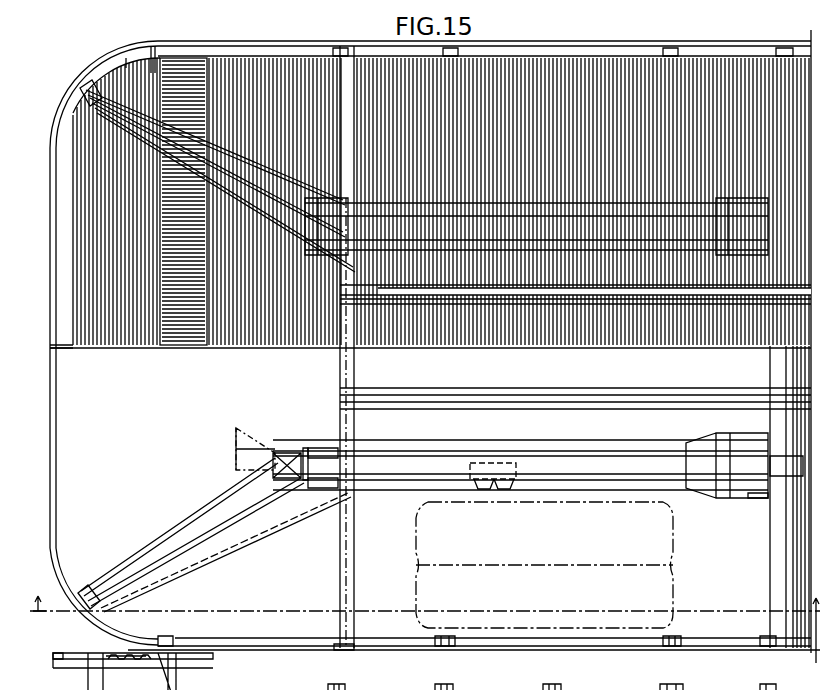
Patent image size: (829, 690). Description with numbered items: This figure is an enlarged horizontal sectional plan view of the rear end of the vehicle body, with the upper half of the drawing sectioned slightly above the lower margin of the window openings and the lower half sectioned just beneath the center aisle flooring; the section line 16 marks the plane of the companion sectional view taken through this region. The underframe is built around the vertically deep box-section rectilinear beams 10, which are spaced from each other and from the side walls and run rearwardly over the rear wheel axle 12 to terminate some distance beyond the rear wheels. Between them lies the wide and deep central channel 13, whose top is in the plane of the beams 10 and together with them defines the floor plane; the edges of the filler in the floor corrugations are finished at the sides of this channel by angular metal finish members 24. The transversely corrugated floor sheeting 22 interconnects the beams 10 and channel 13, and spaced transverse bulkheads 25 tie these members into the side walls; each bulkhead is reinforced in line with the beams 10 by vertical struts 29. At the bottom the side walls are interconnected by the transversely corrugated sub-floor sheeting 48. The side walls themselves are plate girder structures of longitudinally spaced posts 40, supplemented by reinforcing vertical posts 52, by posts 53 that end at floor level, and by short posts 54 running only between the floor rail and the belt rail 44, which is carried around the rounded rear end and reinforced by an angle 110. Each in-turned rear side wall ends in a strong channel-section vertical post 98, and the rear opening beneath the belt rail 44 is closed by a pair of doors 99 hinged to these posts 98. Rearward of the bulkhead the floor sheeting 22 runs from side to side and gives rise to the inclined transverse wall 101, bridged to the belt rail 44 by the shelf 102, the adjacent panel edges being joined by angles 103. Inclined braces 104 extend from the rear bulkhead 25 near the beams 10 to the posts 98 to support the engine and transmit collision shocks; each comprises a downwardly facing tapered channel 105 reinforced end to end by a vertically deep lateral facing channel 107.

The rectilinear beams 10 is at (473, 237).
The rear wheel axle 12 is at (552, 359).
The channel 13 is at (732, 318).
The section line 16 is at (424, 632).
The floor sheeting 22 is at (508, 48).
The angular metal finish members 24 is at (698, 283).
The transverse bulkheads 25 is at (325, 578).
The vertical struts 29 is at (320, 473).
The posts 40 is at (438, 678).
The belt rail 44 is at (48, 650).
The sub-floor sheeting 48 is at (787, 636).
The vertical posts 52 is at (335, 638).
The posts 53 is at (757, 637).
The posts 54 is at (540, 676).
The vertical post 98 is at (86, 60).
The doors 99 is at (56, 470).
The inclined transverse wall 101 is at (180, 77).
The shelf 102 is at (118, 72).
The angles 103 is at (143, 67).
The inclined braces 104 is at (245, 144).
The tapered channel 105 is at (190, 535).
The lateral facing channel 107 is at (125, 565).
The angle 110 is at (58, 338).